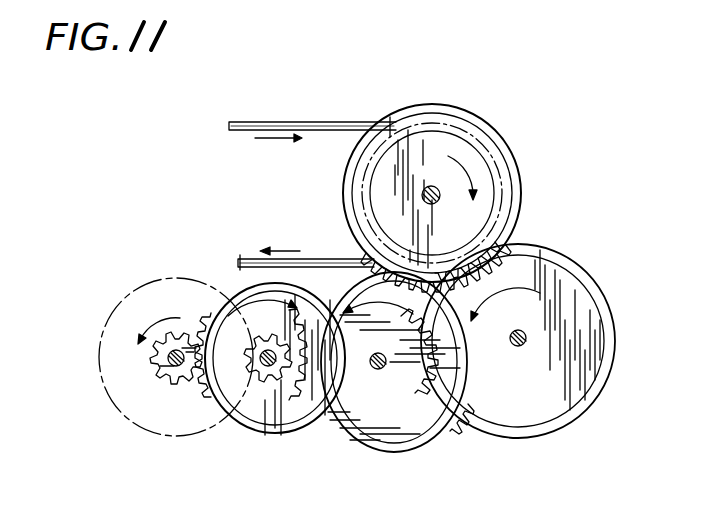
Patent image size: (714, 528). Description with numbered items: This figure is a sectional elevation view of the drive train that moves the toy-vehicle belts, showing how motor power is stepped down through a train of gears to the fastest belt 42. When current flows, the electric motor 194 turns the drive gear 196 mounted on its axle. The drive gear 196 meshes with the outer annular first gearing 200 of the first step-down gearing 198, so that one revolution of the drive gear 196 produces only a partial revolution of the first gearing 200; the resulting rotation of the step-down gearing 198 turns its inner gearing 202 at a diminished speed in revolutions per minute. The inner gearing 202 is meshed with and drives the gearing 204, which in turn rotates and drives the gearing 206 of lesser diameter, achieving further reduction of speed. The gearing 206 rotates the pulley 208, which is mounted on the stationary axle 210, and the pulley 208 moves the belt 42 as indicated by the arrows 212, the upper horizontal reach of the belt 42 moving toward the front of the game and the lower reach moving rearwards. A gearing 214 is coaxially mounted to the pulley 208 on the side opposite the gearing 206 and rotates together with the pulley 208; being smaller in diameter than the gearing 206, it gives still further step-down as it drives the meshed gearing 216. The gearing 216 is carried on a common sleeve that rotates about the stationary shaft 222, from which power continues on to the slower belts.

The belt 42 is at (289, 120).
The electric motor 194 is at (128, 302).
The drive gear 196 is at (171, 376).
The first step-down gearing 198 is at (252, 436).
The outer annular first gearing 200 is at (203, 316).
The inner gearing 202 is at (282, 432).
The gearing 204 is at (425, 430).
The gearing 206 is at (416, 106).
The pulley 208 is at (428, 142).
The axle 210 is at (440, 177).
The arrows 212 is at (266, 139).
The gearing 214 is at (487, 157).
The gearing 216 is at (550, 257).
The stationary shaft 222 is at (520, 347).